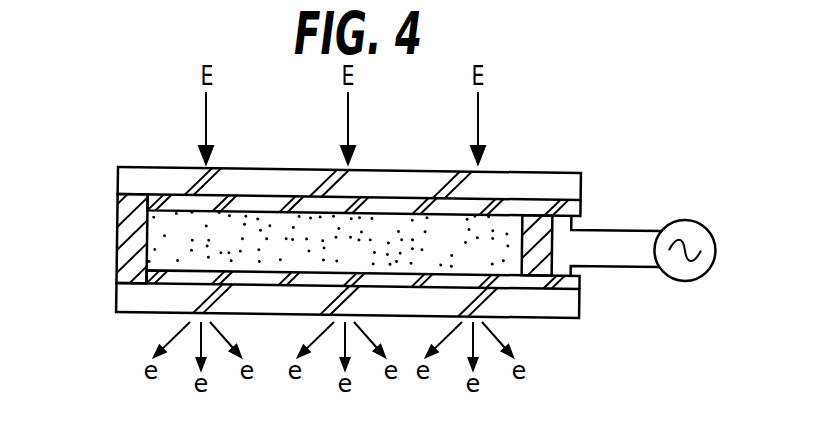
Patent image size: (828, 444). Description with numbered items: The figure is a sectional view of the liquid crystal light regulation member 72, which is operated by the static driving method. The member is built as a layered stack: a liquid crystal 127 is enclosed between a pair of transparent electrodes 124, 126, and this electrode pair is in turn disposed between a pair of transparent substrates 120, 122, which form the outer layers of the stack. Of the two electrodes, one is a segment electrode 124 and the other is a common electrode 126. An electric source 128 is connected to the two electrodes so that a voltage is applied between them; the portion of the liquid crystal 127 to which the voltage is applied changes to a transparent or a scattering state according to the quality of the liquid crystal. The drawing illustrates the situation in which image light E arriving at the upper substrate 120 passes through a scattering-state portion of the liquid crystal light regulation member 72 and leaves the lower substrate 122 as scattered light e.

The liquid crystal light regulation member 72 is at (130, 158).
The transparent substrate 120 is at (553, 167).
The transparent substrate 122 is at (556, 312).
The segment electrode 124 is at (583, 204).
The common electrode 126 is at (583, 280).
The liquid crystal 127 is at (150, 234).
The electric source 128 is at (693, 212).